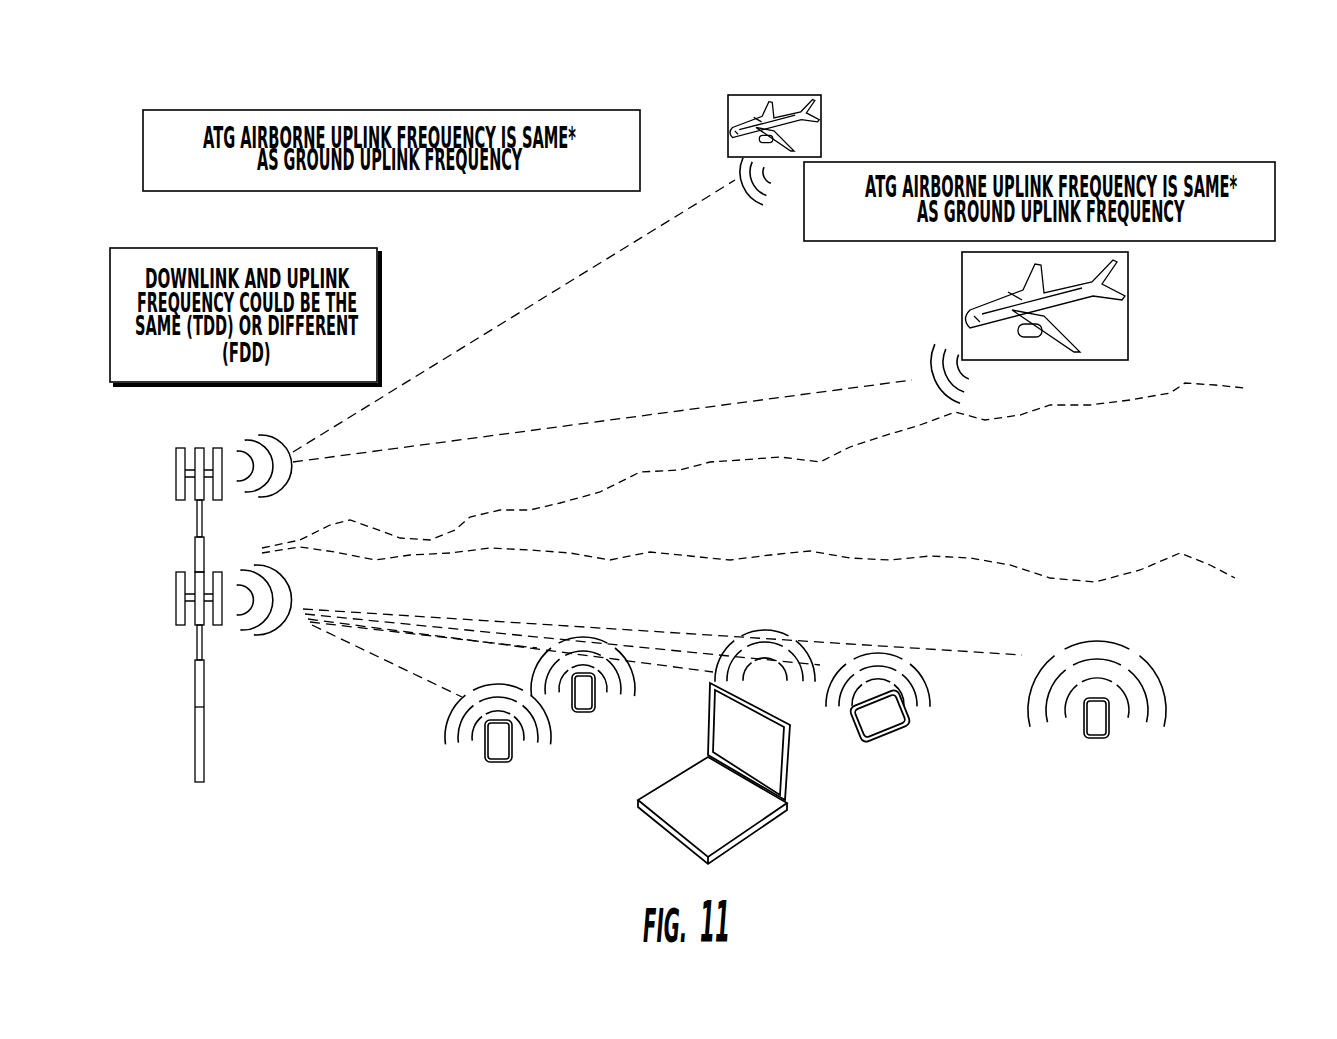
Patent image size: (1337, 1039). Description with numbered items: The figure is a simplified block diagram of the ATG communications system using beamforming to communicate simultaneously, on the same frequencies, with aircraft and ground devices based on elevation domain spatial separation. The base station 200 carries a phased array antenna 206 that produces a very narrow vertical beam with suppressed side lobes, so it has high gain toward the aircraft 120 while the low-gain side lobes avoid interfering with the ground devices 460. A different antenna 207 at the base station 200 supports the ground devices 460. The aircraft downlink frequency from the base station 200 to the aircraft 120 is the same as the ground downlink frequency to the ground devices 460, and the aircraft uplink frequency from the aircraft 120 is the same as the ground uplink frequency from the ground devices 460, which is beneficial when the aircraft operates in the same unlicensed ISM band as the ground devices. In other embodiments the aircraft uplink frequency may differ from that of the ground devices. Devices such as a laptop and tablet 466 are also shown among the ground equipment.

The aircraft 120 is at (822, 112).
The base station 200 is at (145, 477).
The phased array antenna 206 is at (200, 448).
The different antenna 207 is at (181, 573).
The ground devices 460 is at (584, 713).
The user computing device (laptop/tablet) 466 is at (885, 737).